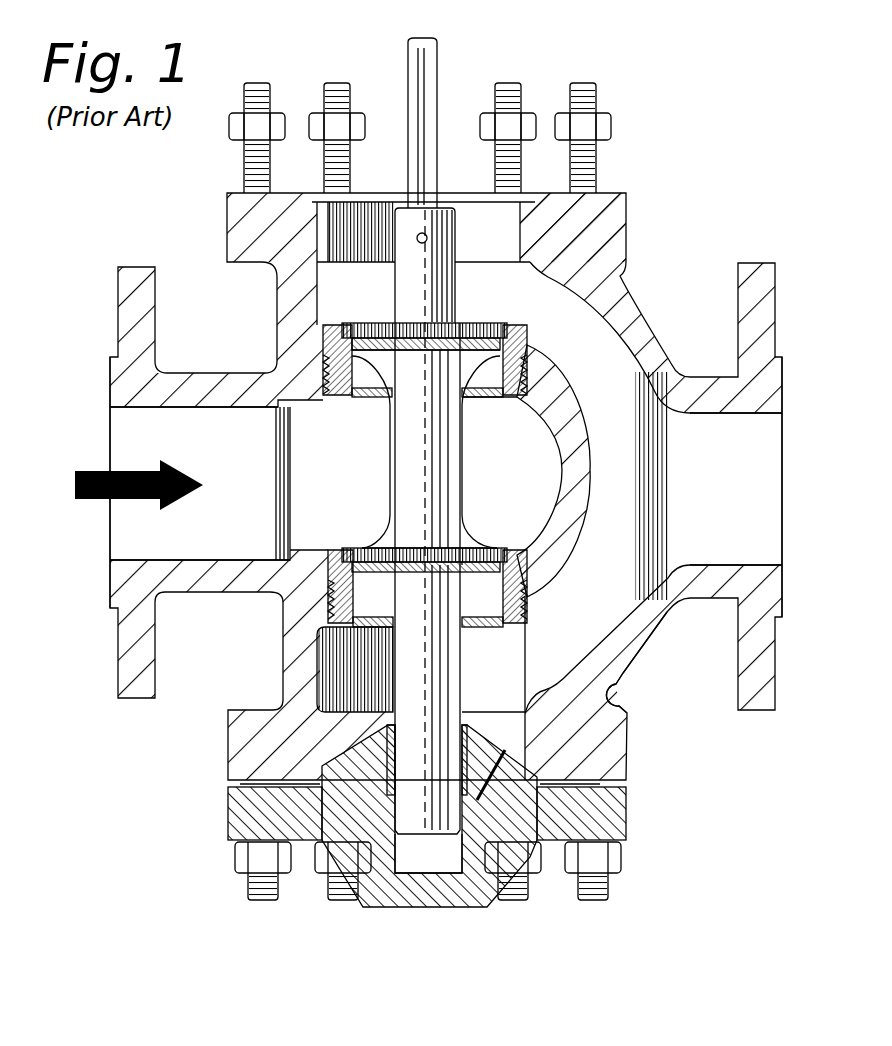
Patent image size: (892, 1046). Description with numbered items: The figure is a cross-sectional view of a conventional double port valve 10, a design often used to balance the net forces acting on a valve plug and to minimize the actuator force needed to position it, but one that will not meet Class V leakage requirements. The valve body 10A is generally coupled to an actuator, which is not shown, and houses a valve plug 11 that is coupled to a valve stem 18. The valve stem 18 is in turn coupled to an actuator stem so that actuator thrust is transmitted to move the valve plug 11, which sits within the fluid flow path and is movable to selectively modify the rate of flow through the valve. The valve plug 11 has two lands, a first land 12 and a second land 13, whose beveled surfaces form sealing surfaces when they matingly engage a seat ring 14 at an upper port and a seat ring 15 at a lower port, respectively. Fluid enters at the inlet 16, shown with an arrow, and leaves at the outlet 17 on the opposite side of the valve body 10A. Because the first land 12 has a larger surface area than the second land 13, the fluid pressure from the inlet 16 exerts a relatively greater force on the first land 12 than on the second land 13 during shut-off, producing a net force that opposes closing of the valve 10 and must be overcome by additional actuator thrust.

The double port valve 10 is at (706, 207).
The valve body 10A is at (634, 665).
The valve plug 11 is at (400, 433).
The first land 12 is at (480, 323).
The second land 13 is at (497, 548).
The seat ring 14 is at (530, 326).
The seat ring 15 is at (337, 550).
The inlet 16 is at (122, 540).
The outlet 17 is at (762, 521).
The valve stem 18 is at (414, 102).